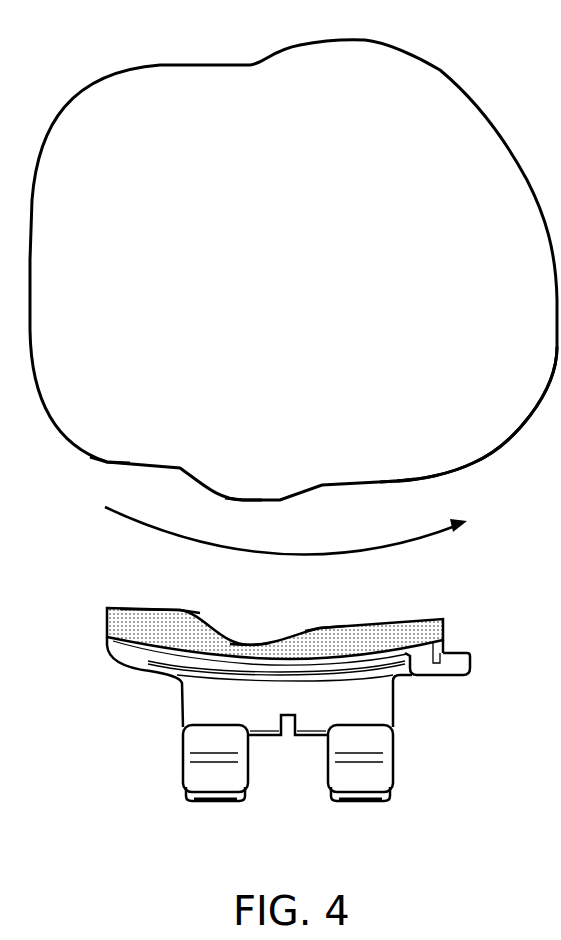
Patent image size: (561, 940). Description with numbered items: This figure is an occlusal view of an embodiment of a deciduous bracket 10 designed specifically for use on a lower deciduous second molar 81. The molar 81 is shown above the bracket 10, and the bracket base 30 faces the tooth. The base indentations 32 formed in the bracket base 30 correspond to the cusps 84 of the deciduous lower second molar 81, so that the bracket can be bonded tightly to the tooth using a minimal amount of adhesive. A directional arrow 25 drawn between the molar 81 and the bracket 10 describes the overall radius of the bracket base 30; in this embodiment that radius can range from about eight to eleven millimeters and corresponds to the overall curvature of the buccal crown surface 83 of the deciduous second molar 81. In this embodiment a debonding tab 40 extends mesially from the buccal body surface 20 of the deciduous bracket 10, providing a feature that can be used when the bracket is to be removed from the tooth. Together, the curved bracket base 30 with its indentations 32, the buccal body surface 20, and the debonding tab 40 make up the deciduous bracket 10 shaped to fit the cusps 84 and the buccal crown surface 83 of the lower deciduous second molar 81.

The deciduous bracket 10 is at (282, 677).
The buccal body surface 20 is at (107, 642).
The directional arrow 25 is at (428, 538).
The bracket base 30 is at (322, 606).
The base indentations 32 is at (142, 608).
The debonding tab 40 is at (462, 663).
The lower deciduous second molar 81 is at (413, 50).
The buccal crown surface 83 is at (473, 465).
The cusps 84 is at (107, 462).